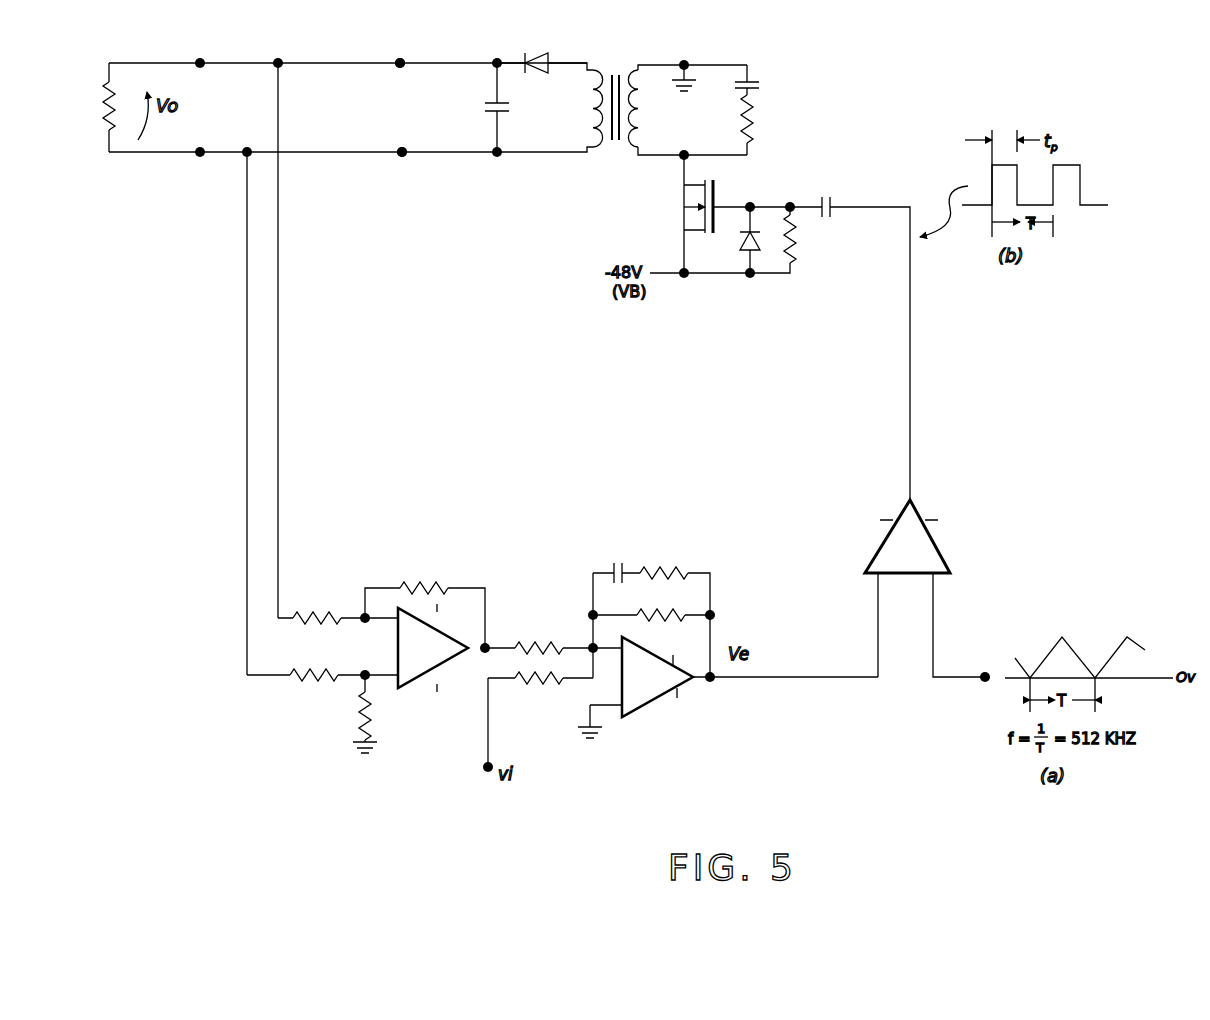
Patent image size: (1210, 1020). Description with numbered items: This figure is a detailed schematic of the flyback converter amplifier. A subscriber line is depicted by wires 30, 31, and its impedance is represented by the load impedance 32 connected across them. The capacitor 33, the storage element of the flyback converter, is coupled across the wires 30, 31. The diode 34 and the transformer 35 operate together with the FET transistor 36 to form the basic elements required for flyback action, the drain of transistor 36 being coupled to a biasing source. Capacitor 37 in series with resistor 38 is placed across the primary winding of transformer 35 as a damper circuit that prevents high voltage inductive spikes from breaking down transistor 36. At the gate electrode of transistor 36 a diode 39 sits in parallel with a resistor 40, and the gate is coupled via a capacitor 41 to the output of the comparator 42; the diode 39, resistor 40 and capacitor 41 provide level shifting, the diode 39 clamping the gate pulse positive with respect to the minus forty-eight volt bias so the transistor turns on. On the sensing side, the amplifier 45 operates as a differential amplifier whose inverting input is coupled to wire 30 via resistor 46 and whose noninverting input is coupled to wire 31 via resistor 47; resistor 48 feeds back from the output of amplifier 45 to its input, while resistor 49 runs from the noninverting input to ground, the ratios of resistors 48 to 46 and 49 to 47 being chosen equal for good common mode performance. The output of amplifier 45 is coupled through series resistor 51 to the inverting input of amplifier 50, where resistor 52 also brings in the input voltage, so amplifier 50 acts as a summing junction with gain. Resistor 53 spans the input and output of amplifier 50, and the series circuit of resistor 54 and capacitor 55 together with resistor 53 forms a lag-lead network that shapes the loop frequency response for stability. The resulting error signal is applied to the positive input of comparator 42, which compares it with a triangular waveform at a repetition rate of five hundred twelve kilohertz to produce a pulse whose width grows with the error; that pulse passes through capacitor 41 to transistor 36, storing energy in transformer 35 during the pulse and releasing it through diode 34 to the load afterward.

The wire 30 is at (406, 42).
The wire 31 is at (410, 126).
The load impedance R_L 32 is at (103, 88).
The capacitor 33 is at (485, 108).
The diode 34 is at (543, 47).
The transformer 35 is at (630, 60).
The FET transistor 36 is at (718, 192).
The capacitor 37 is at (758, 80).
The resistor 38 is at (760, 101).
The diode 39 is at (760, 232).
The resistor 40 is at (800, 250).
The capacitor 41 is at (835, 197).
The comparator 42 is at (942, 554).
The amplifier A_1 45 is at (416, 680).
The resistor 46 is at (325, 612).
The resistor 47 is at (312, 681).
The resistor 48 is at (440, 586).
The resistor 49 is at (358, 720).
The amplifier A_2 50 is at (645, 712).
The series resistor 51 is at (555, 644).
The resistor 52 is at (557, 684).
The resistor 53 is at (683, 615).
The resistor 54 is at (685, 574).
The capacitor 55 is at (626, 568).